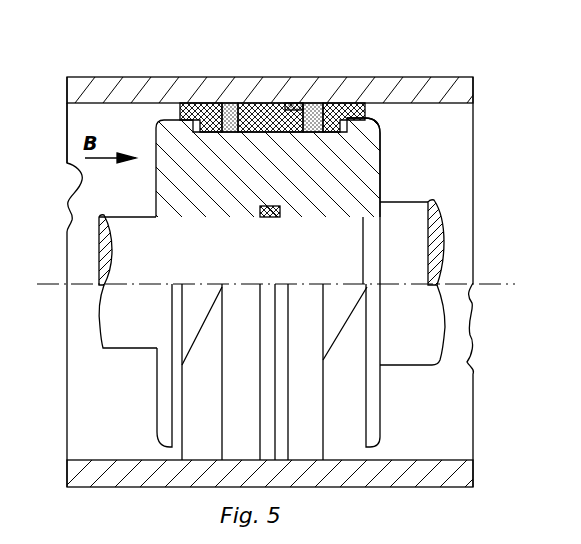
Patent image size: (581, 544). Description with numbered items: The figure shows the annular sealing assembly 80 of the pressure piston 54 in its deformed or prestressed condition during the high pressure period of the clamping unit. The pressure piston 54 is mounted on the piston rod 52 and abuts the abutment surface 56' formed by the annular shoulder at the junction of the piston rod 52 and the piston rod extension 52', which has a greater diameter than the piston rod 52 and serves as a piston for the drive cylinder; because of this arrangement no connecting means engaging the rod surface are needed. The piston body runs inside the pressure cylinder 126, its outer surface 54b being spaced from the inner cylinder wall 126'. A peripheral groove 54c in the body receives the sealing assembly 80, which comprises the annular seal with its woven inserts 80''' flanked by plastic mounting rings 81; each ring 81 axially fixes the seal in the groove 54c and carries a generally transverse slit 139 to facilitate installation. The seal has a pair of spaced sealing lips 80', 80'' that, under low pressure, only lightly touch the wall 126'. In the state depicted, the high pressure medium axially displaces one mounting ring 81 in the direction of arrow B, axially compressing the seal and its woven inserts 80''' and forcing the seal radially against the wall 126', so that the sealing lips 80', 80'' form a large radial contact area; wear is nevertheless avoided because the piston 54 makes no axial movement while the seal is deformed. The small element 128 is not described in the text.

The pressure cylinder 126 is at (267, 63).
The inner cylinder wall 126' is at (55, 117).
The plastic mounting ring 81 is at (178, 107).
The woven inserts 80''' is at (279, 77).
The first sealing lip 80' is at (268, 77).
The second sealing lip 80'' is at (293, 66).
The annular sealing assembly 80 is at (319, 77).
The pressure piston 54 is at (432, 148).
The outer surface 54b is at (162, 128).
The peripheral groove 54c is at (340, 133).
The piston rod 52 is at (256, 275).
The piston rod extension 52' is at (446, 275).
The abutment surface 56' is at (391, 290).
The transverse slit 139 is at (368, 309).
The key 128 is at (269, 219).